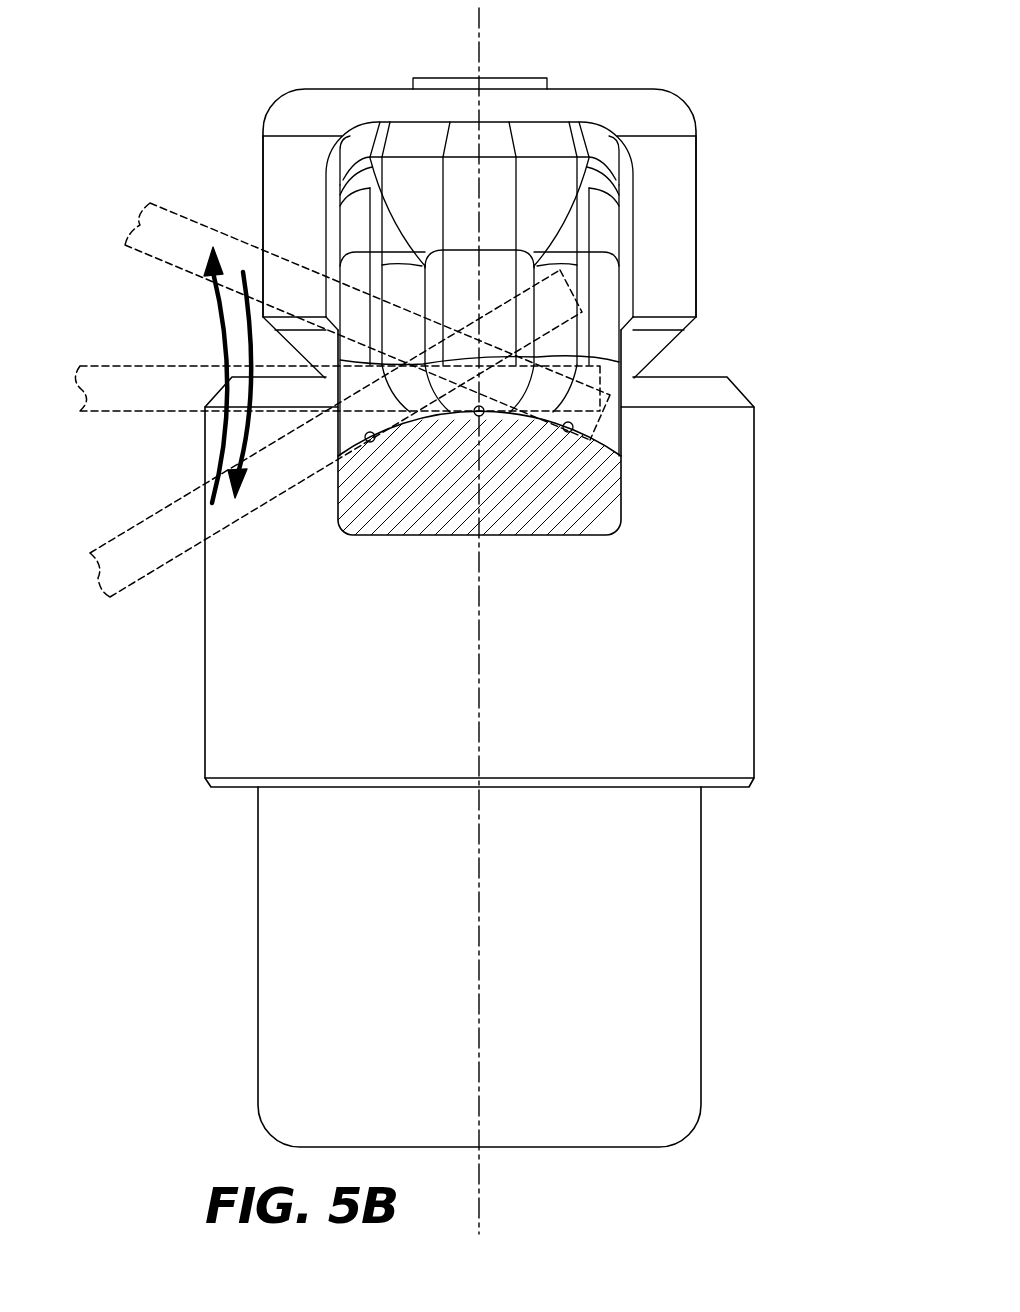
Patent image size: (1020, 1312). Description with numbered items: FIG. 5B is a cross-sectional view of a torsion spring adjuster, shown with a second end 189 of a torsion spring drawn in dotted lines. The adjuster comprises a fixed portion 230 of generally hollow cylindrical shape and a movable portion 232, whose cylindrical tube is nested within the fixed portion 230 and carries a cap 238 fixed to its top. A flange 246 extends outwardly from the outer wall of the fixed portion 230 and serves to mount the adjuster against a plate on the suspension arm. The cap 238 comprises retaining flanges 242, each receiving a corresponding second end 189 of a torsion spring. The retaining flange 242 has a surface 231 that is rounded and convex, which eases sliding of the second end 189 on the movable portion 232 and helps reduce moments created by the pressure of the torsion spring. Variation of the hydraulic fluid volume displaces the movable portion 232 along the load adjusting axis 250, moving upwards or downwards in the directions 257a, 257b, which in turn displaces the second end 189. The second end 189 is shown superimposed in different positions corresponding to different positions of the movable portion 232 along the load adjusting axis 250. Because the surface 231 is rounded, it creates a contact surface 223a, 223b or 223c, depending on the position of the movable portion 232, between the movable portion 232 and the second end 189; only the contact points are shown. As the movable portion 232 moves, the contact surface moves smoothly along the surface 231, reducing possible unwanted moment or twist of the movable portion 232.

The second end of torsion spring 189 is at (138, 226).
The contact surface 223a is at (372, 442).
The contact surface 223b is at (483, 415).
The contact surface 223c is at (570, 432).
The fixed portion 230 is at (754, 500).
The rounded surface 231 is at (357, 443).
The movable portion 232 is at (683, 103).
The cap 238 is at (311, 89).
The retaining flange 242 is at (352, 355).
The flange 246 is at (756, 782).
The load adjusting axis 250 is at (479, 57).
The upward direction 257a is at (215, 280).
The downward direction 257b is at (242, 461).